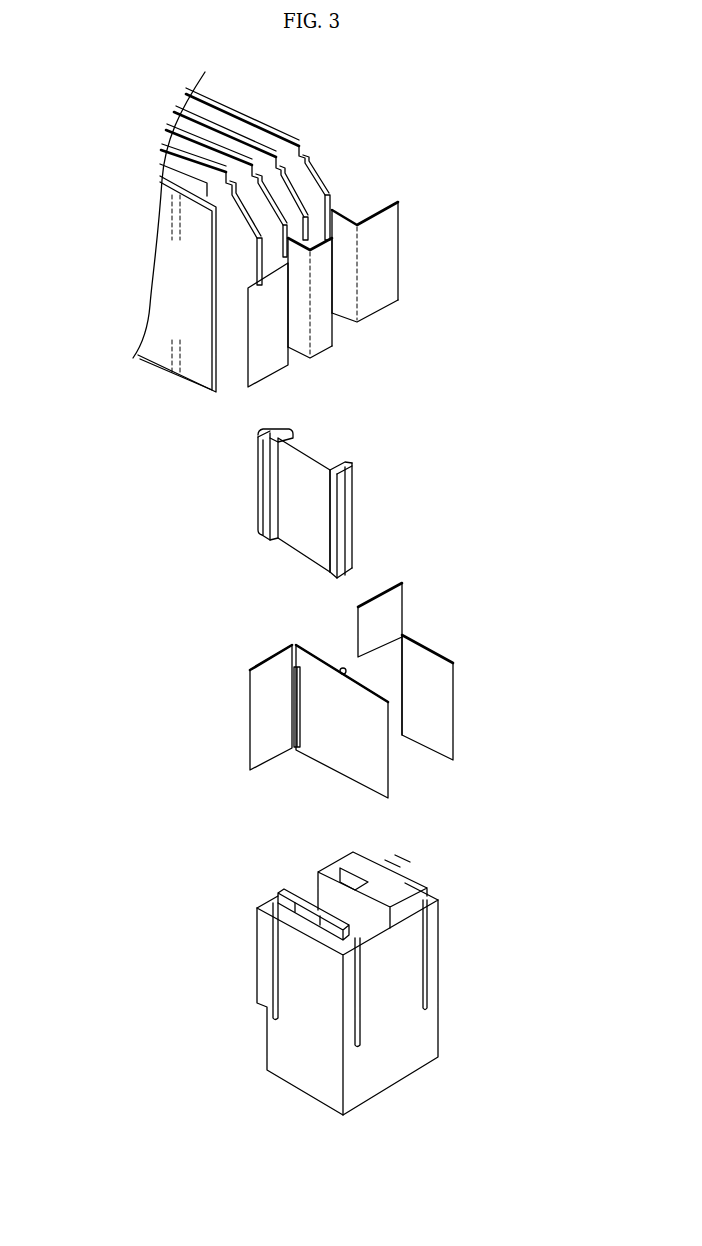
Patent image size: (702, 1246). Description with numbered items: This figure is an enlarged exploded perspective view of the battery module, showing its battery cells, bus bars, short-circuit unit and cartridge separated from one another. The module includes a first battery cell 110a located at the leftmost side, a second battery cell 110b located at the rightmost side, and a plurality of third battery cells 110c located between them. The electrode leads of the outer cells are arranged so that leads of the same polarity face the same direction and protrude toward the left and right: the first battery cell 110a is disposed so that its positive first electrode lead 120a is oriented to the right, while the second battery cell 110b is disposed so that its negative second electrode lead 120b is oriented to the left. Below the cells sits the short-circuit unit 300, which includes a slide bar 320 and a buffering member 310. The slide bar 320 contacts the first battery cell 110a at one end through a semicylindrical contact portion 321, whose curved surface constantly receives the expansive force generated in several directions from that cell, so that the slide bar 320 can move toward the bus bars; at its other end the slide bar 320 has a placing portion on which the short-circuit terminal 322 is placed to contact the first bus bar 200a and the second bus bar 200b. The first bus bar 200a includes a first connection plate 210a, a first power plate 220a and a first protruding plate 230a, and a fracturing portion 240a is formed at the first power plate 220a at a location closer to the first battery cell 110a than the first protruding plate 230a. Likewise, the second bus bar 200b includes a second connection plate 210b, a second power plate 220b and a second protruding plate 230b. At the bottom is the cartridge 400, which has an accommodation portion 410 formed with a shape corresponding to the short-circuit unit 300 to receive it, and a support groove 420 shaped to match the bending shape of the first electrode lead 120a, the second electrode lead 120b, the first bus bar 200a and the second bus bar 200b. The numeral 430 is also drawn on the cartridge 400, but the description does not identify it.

The first battery cell 110a is at (167, 168).
The second battery cell 110b is at (190, 103).
The third battery cells 110c is at (168, 140).
The first electrode lead 120a is at (270, 360).
The second electrode lead 120b is at (382, 297).
The short-circuit unit 300 is at (305, 494).
The buffering member 310 is at (268, 495).
The slide bar 320 is at (313, 457).
The contact portion 321 is at (258, 431).
The short-circuit terminal 322 is at (347, 508).
The first bus bar 200a is at (323, 717).
The second bus bar 200b is at (445, 688).
The first connection plate 210a is at (260, 708).
The first power plate 220a is at (335, 753).
The first protruding plate 230a is at (343, 668).
The fracturing portion 240a is at (293, 647).
The second connection plate 210b is at (392, 605).
The second power plate 220b is at (440, 683).
The second protruding plate 230b is at (402, 735).
The cartridge 400 is at (463, 897).
The accommodation portion 410 is at (347, 927).
The support groove 420 is at (362, 1045).
The holder block 430 is at (402, 895).